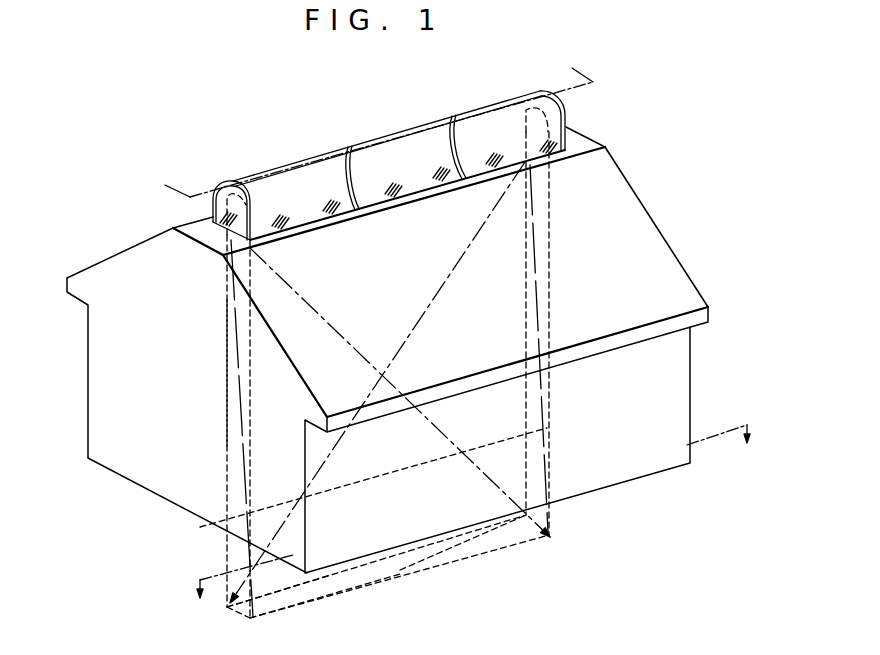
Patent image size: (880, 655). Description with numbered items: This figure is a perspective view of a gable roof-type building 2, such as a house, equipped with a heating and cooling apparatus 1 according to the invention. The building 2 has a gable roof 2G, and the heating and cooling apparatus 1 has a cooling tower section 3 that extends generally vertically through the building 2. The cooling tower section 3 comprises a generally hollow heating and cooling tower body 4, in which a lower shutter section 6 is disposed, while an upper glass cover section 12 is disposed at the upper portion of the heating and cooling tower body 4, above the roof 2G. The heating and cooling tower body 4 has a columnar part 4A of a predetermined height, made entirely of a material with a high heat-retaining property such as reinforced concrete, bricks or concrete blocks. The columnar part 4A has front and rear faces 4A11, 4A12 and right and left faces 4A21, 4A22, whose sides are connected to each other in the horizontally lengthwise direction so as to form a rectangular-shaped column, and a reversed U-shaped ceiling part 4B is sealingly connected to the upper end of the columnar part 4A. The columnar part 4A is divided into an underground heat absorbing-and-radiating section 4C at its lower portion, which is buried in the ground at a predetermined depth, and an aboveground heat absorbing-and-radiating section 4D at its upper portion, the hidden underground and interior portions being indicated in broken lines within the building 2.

The heating and cooling apparatus 1 is at (666, 141).
The building 2 is at (632, 257).
The roof 2G is at (600, 200).
The cooling tower section 3 is at (620, 527).
The heating and cooling tower body 4 is at (272, 159).
The columnar part 4A is at (453, 453).
The front face 4A11 is at (433, 427).
The rear face 4A12 is at (312, 470).
The right face 4A21 is at (240, 430).
The left face 4A22 is at (537, 338).
The reversed U-shaped ceiling part 4B is at (488, 138).
The underground heat absorbing-and-radiating section 4C is at (295, 610).
The aboveground heat absorbing-and-radiating section 4D is at (227, 377).
The lower shutter section 6 is at (369, 122).
The upper glass cover section 12 is at (378, 140).